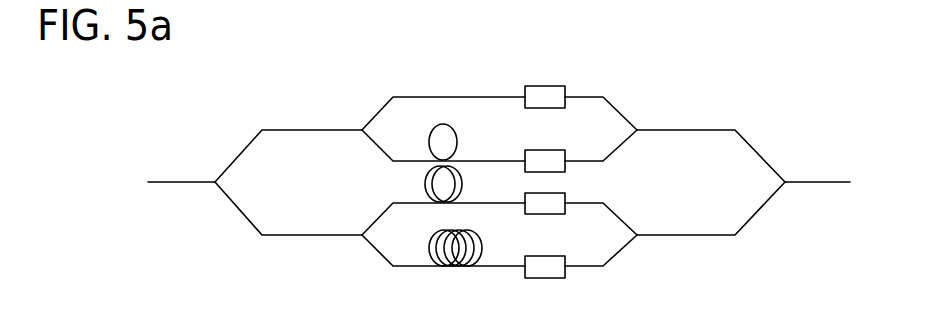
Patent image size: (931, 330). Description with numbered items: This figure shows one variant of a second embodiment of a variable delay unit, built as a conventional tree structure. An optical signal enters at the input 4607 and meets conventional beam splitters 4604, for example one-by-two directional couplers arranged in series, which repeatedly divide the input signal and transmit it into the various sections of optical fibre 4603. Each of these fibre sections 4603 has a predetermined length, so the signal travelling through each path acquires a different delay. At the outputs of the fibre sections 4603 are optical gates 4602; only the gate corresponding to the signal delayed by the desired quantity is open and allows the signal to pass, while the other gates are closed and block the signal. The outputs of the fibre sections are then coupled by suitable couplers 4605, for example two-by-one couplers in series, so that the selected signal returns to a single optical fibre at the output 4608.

The input 4607 is at (173, 181).
The beam splitters 4604 is at (266, 115).
The sections of optical fibre 4603 is at (432, 82).
The optical gates 4602 is at (556, 70).
The couplers 4605 is at (722, 110).
The output 4608 is at (825, 181).